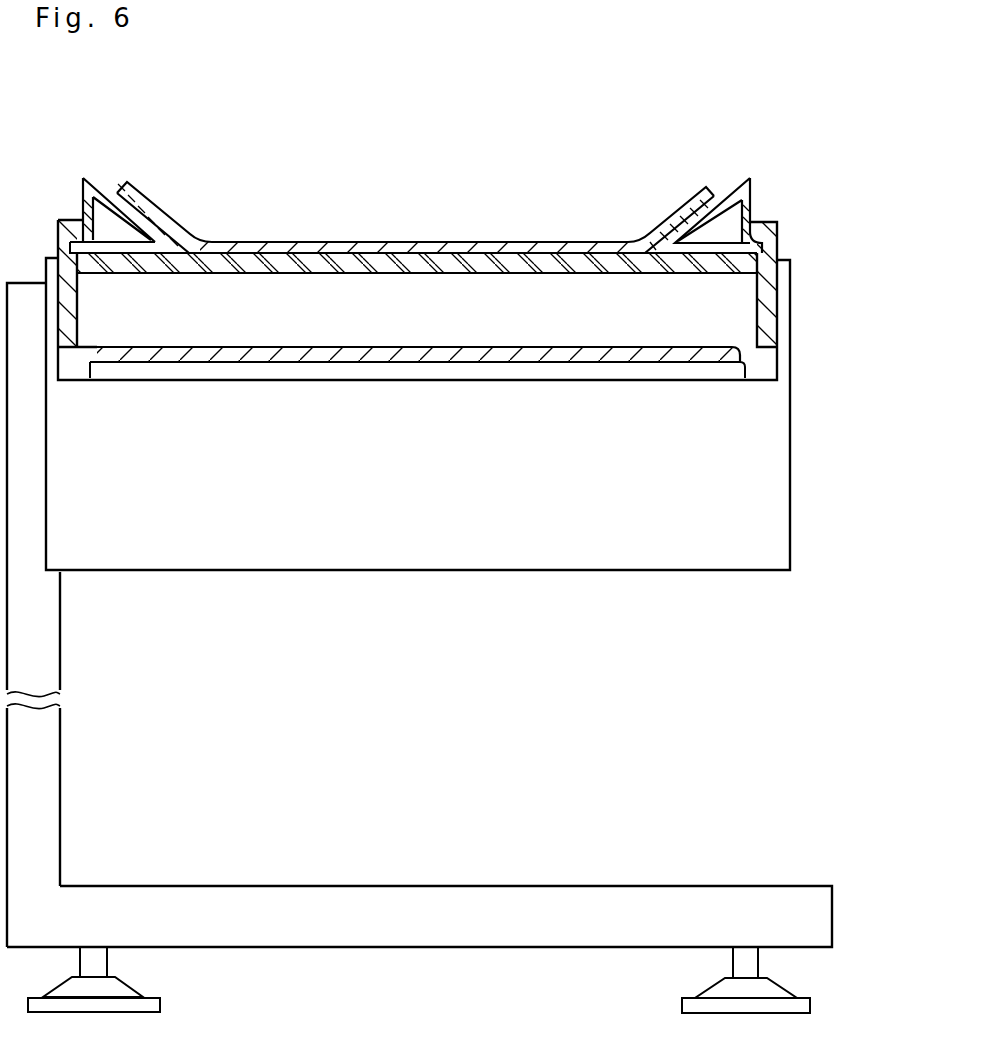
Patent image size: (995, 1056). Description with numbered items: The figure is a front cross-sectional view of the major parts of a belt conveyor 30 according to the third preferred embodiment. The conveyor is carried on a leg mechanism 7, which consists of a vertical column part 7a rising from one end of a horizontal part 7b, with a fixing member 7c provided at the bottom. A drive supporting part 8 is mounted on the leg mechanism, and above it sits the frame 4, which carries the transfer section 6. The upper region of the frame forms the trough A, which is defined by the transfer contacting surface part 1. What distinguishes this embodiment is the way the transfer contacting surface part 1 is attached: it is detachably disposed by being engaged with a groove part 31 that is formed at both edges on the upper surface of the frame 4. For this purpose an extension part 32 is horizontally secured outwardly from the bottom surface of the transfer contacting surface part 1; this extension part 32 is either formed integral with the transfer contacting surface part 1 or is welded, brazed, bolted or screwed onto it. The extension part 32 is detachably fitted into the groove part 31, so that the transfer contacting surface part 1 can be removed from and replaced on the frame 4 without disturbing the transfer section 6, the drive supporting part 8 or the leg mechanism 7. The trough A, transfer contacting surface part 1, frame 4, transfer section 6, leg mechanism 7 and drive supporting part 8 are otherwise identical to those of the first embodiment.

The transfer contacting surface part 1 is at (713, 188).
The frame 4 is at (768, 307).
The transfer section 6 is at (338, 353).
The leg mechanism 7 is at (442, 655).
The vertical column part 7a is at (40, 743).
The horizontal part 7b is at (450, 912).
The fixing member 7c is at (798, 1006).
The drive supporting part 8 is at (727, 478).
The belt conveyor 30 is at (450, 229).
The groove part 31 is at (767, 222).
The extension part 32 is at (740, 240).
The trough A is at (480, 179).